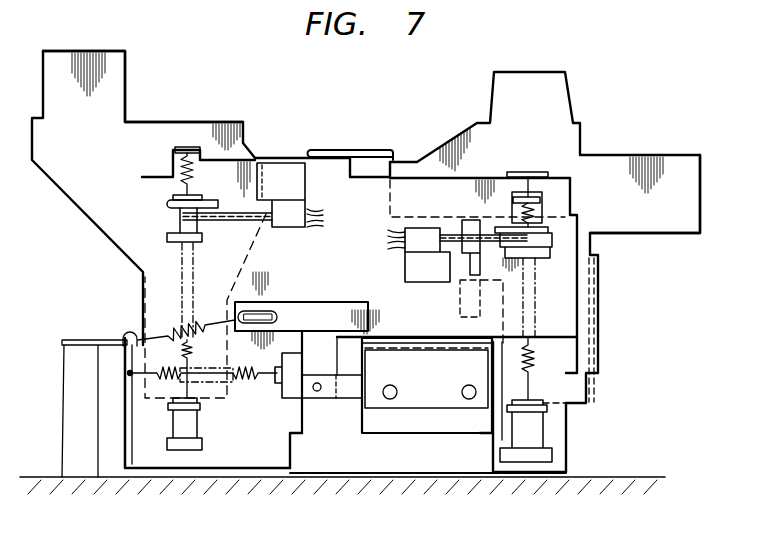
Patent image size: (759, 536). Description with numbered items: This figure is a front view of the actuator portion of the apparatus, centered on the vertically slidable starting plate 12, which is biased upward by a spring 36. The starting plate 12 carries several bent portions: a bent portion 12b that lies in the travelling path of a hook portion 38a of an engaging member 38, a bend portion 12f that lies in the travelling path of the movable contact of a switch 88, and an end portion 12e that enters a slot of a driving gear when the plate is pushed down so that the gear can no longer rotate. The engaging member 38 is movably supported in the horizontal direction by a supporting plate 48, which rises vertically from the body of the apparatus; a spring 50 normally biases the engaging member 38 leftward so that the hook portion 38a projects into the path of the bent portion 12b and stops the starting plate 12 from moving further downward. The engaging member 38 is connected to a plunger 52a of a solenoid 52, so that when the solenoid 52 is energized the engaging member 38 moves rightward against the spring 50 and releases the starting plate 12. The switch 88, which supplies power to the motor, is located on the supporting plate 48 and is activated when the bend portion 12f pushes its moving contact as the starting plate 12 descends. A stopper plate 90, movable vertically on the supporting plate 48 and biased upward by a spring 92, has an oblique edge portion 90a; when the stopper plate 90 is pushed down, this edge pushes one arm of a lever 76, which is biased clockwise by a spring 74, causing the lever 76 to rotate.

The starting plate 12 is at (572, 138).
The bent portion 12b is at (468, 263).
The end portion 12e is at (677, 233).
The bend portion 12f is at (545, 197).
The spring 36 is at (535, 357).
The engaging member 38 is at (373, 307).
The hook portion 38a is at (467, 297).
The supporting plate 48 is at (282, 452).
The spring 50 is at (238, 382).
The solenoid 52 is at (440, 425).
The plunger 52a is at (345, 388).
The spring 74 is at (192, 321).
The lever 76 is at (267, 312).
The switch 88 is at (453, 230).
The stopper plate 90 is at (145, 132).
The oblique edge portion 90a is at (258, 257).
The spring 92 is at (190, 180).